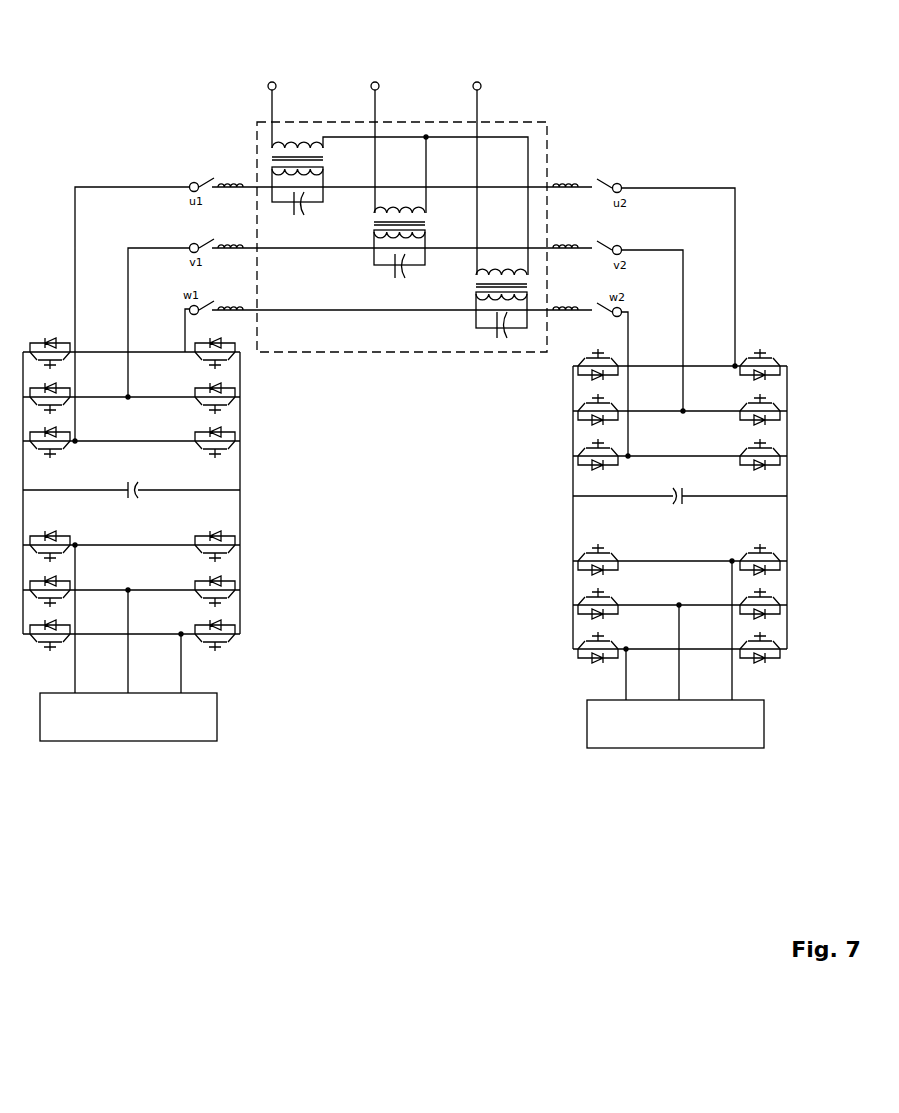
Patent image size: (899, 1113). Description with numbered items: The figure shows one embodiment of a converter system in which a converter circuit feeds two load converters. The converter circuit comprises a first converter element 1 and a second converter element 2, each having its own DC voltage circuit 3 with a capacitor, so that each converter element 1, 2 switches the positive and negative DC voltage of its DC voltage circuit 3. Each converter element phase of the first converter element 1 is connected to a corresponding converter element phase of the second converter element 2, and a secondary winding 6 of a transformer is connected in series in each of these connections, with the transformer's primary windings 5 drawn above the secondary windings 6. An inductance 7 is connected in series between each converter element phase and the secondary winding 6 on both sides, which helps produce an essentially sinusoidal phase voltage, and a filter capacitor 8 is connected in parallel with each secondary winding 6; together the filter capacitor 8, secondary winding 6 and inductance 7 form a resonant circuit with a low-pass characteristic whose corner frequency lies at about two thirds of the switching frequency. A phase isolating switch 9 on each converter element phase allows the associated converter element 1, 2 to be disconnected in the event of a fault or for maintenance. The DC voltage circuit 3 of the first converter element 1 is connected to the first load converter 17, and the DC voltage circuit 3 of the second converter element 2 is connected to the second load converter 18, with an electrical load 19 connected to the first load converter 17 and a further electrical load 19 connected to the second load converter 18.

The first converter element 1 is at (100, 388).
The second converter element 2 is at (712, 393).
The DC voltage circuit 3 is at (115, 502).
The primary winding 5 is at (283, 150).
The secondary winding 6 is at (307, 172).
The inductance 7 is at (225, 235).
The filter capacitor 8 is at (298, 200).
The phase isolating switch 9 is at (207, 317).
The first load converter 17 is at (105, 558).
The second load converter 18 is at (652, 582).
The electrical load 19 is at (143, 742).